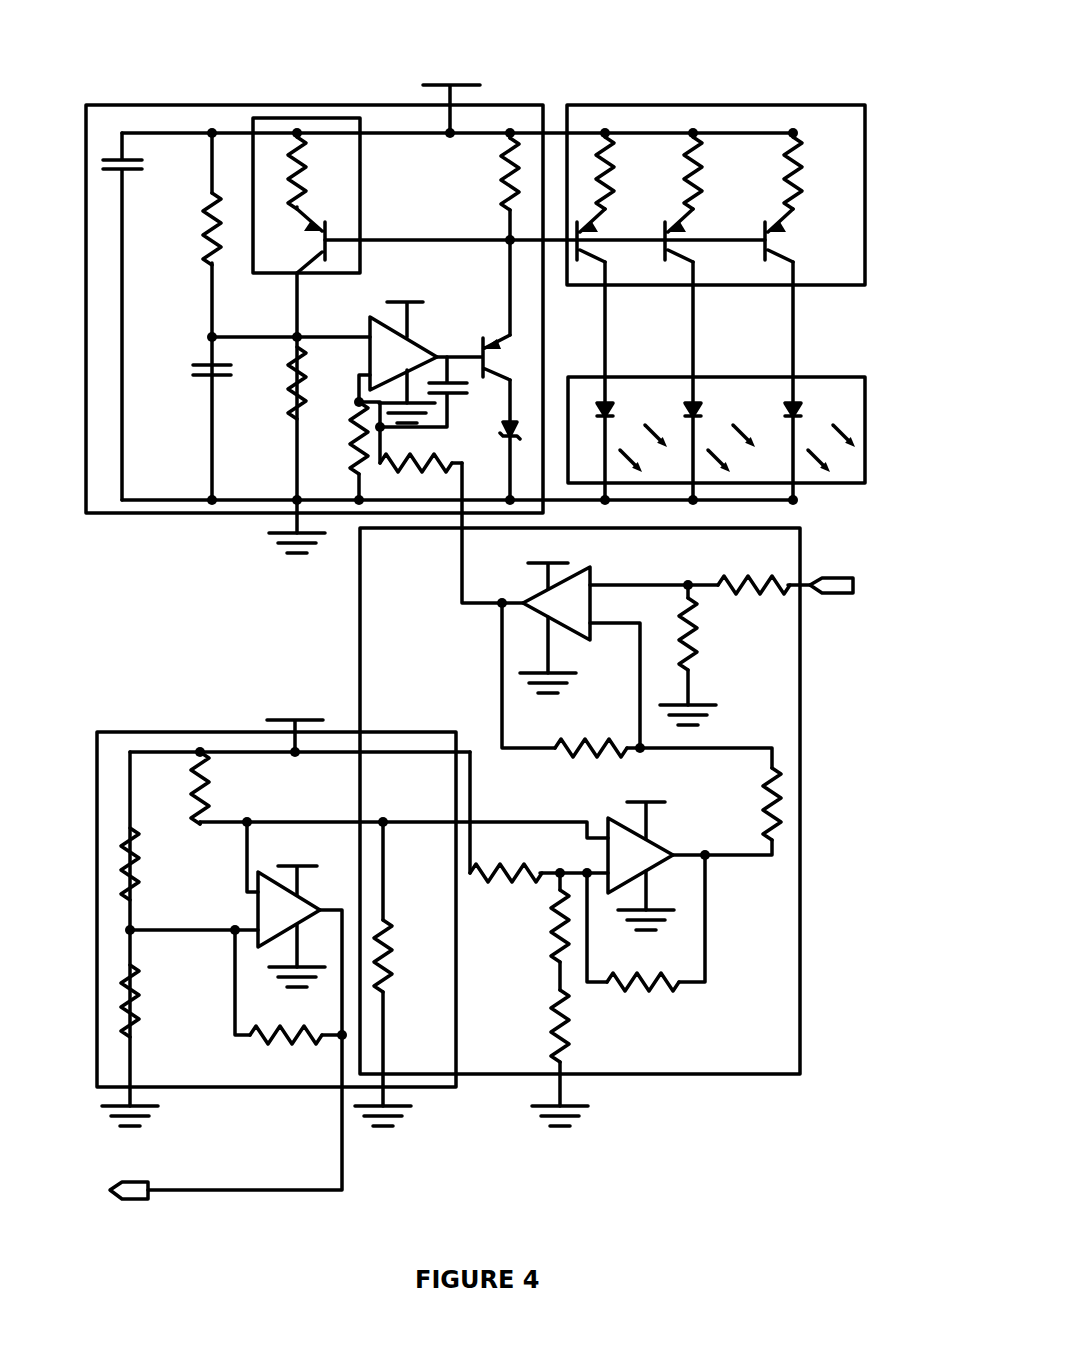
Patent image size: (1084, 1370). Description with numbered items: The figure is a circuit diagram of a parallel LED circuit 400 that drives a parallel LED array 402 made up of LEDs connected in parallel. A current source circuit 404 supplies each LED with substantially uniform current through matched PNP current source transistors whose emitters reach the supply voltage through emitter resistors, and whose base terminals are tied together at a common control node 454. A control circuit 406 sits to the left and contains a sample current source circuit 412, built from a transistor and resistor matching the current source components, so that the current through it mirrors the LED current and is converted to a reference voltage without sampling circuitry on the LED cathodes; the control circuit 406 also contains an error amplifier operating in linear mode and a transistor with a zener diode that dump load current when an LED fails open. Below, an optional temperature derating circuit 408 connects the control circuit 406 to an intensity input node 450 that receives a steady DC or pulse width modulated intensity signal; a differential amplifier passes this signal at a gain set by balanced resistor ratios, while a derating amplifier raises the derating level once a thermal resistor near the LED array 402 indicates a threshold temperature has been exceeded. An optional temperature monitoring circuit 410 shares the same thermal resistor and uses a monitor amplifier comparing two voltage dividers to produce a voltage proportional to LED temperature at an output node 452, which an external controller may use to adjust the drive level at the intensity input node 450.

The parallel LED circuit 400 is at (562, 55).
The parallel LED array 402 is at (803, 377).
The current source circuit 404 is at (695, 105).
The control circuit 406 is at (112, 513).
The temperature derating circuit 408 is at (360, 578).
The temperature monitoring circuit 410 is at (130, 732).
The sample current source circuit 412 is at (360, 148).
The intensity input node 450 is at (823, 595).
The output node 452 is at (132, 1182).
The common control node 454 is at (508, 238).